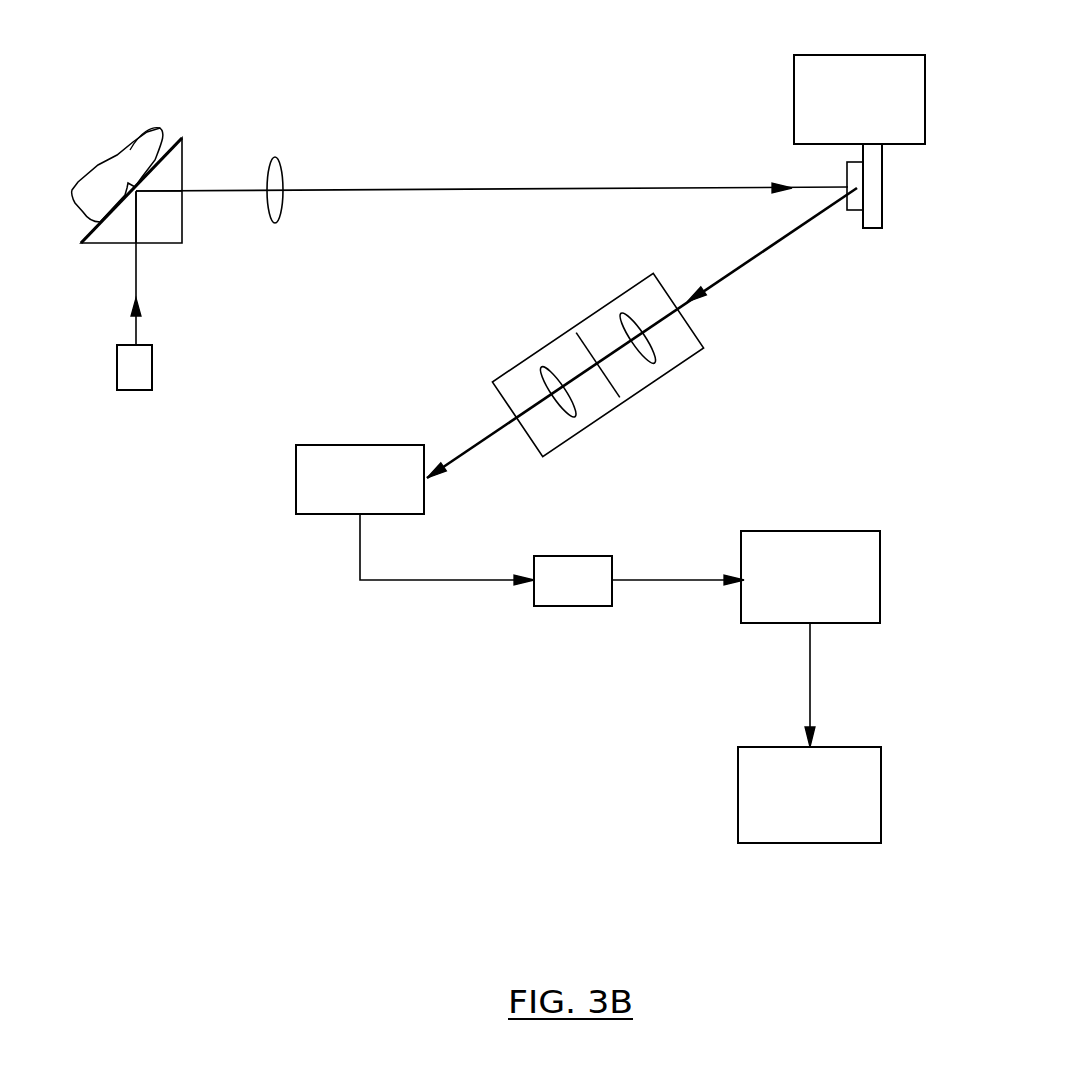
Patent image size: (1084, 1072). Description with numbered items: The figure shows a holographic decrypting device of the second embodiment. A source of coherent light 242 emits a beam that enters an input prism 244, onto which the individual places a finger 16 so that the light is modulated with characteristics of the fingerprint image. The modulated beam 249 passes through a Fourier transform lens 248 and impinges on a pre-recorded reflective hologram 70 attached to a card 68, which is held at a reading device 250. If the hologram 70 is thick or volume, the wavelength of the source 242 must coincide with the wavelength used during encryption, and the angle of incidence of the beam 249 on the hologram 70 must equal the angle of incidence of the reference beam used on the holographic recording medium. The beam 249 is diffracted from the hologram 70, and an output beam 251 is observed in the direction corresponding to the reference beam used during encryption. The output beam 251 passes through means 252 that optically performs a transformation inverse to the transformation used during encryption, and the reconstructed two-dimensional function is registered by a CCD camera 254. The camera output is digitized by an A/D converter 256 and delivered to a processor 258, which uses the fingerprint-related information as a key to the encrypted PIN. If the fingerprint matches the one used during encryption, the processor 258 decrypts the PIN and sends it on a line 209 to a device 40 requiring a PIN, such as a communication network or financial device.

The finger 16 is at (98, 173).
The input prism 244 is at (185, 243).
The source of coherent light 242 is at (152, 375).
The Fourier transform lens 248 is at (283, 172).
The beam 249 is at (626, 187).
The reading device 250 is at (836, 55).
The card 68 is at (878, 205).
The pre-recorded reflective hologram 70 is at (852, 213).
The output beam 251 is at (768, 250).
The means performing optically an inverse transformation 252 is at (683, 355).
The CCD camera 254 is at (296, 473).
The A/D converter 256 is at (557, 600).
The processor 258 is at (808, 535).
The line 209 is at (812, 685).
The device requiring a PIN 40 is at (790, 835).